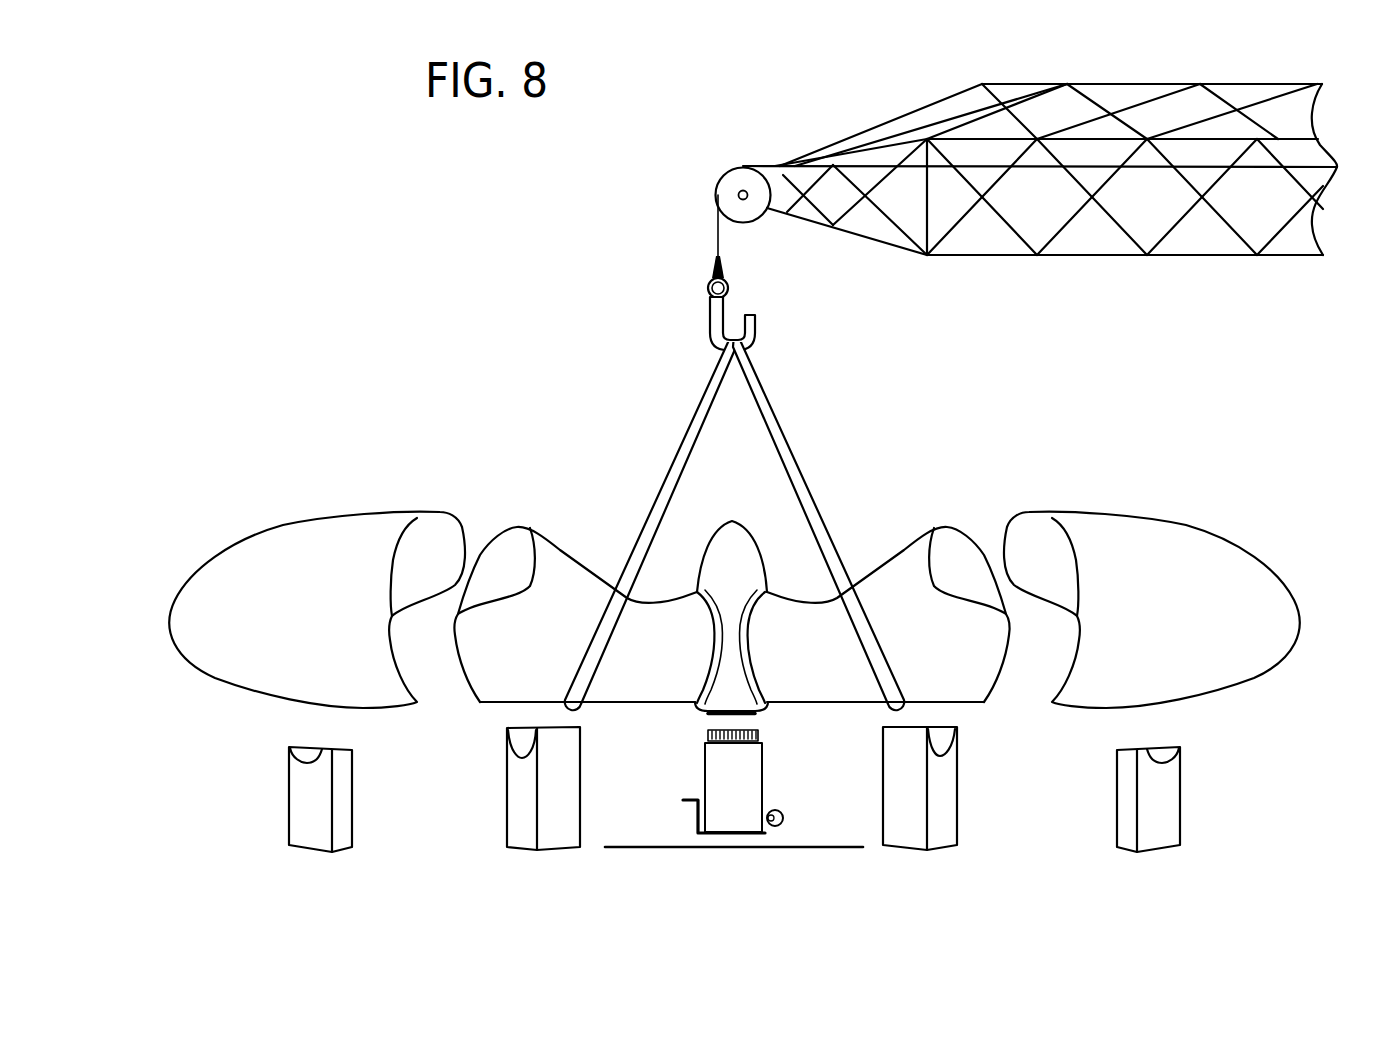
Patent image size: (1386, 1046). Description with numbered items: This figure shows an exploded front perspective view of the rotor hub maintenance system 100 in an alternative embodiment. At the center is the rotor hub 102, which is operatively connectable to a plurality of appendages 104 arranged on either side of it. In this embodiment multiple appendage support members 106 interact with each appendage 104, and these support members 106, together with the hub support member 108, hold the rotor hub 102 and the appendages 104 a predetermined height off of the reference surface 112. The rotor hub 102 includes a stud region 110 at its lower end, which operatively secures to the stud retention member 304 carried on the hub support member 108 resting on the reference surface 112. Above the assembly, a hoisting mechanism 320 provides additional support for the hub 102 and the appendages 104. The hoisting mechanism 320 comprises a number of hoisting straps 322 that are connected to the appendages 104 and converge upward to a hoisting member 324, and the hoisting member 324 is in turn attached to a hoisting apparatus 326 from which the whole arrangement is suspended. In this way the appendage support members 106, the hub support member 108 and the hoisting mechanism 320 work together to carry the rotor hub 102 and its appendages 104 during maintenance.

The rotor hub maintenance system 100 is at (293, 264).
The rotor hub 102 is at (732, 521).
The appendages 104 is at (1110, 476).
The appendage support members 106 is at (333, 850).
The hub support member 108 is at (722, 876).
The stud region 110 is at (770, 724).
The reference surface 112 is at (818, 848).
The stud retention member 304 is at (690, 733).
The hoisting mechanism 320 is at (608, 232).
The hoisting straps 322 is at (672, 468).
The hoisting member 324 is at (756, 334).
The hoisting apparatus 326 is at (958, 257).